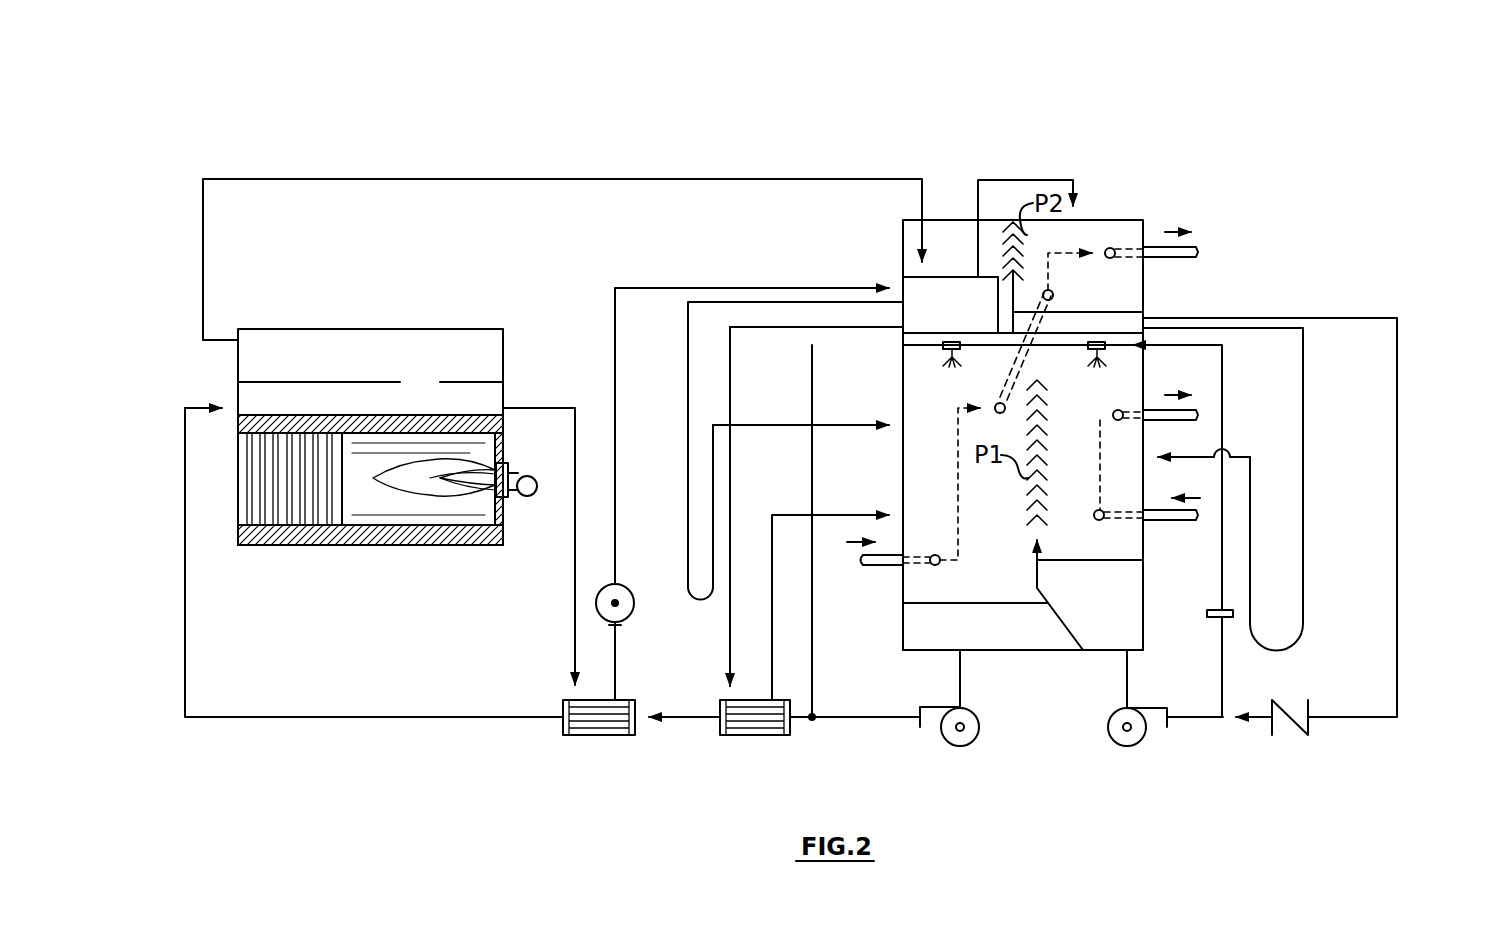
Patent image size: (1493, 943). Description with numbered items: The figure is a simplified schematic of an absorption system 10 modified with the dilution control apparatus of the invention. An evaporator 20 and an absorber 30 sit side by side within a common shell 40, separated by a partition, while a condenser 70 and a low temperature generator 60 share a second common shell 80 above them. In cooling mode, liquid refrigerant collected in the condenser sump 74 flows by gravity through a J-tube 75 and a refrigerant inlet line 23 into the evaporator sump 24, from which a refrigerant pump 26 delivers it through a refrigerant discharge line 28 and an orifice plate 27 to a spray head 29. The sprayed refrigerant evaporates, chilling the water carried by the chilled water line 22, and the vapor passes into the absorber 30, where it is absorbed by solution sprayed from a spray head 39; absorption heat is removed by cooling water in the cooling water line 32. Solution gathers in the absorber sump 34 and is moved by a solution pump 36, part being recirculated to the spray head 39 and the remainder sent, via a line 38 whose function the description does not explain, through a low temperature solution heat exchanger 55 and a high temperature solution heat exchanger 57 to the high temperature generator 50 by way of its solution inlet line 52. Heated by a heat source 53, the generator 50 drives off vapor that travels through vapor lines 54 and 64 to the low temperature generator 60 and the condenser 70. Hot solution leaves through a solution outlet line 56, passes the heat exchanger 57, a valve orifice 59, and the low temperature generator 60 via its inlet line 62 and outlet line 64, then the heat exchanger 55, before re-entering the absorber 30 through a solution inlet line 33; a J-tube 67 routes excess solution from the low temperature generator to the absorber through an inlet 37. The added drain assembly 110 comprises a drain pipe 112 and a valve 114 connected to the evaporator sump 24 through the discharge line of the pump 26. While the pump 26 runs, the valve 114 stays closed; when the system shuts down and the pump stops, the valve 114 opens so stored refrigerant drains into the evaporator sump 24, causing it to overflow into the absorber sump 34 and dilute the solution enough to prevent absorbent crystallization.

The absorption system 10 is at (380, 742).
The evaporator 20 is at (1138, 388).
The chilled water line 22 is at (1185, 424).
The refrigerant inlet line 23 is at (1200, 460).
The evaporator sump 24 is at (1105, 625).
The refrigerant pump 26 is at (1135, 746).
The orifice plate 27 is at (1214, 619).
The refrigerant discharge line 28 is at (1203, 720).
The spray head 29 is at (1085, 348).
The absorber 30 is at (916, 396).
The cooling water line 32 is at (880, 567).
The solution inlet line 33 is at (871, 513).
The absorber sump 34 is at (927, 638).
The solution pump 36 is at (950, 745).
The inlet 37 is at (843, 426).
The return line 38 is at (873, 718).
The spray head 39 is at (962, 350).
The common shell 40 is at (1003, 653).
The high temperature generator 50 is at (508, 404).
The solution inlet line 52 is at (185, 653).
The heat source 53 is at (530, 498).
The vapor line 54 is at (203, 280).
The low temperature solution heat exchanger 55 is at (755, 735).
The solution outlet line 56 is at (528, 410).
The high temperature solution heat exchanger 57 is at (608, 735).
The valve orifice 59 is at (632, 614).
The low temperature generator 60 is at (947, 262).
The inlet line 62 is at (842, 286).
The vapor line 64 is at (790, 328).
The J-tube 67 is at (688, 477).
The condenser 70 is at (1105, 240).
The condenser sump 74 is at (1115, 320).
The J-tube 75 is at (1305, 392).
The common shell 80 is at (903, 238).
The drain assembly 110 is at (1300, 745).
The drain pipe 112 is at (1398, 540).
The valve 114 is at (1290, 710).